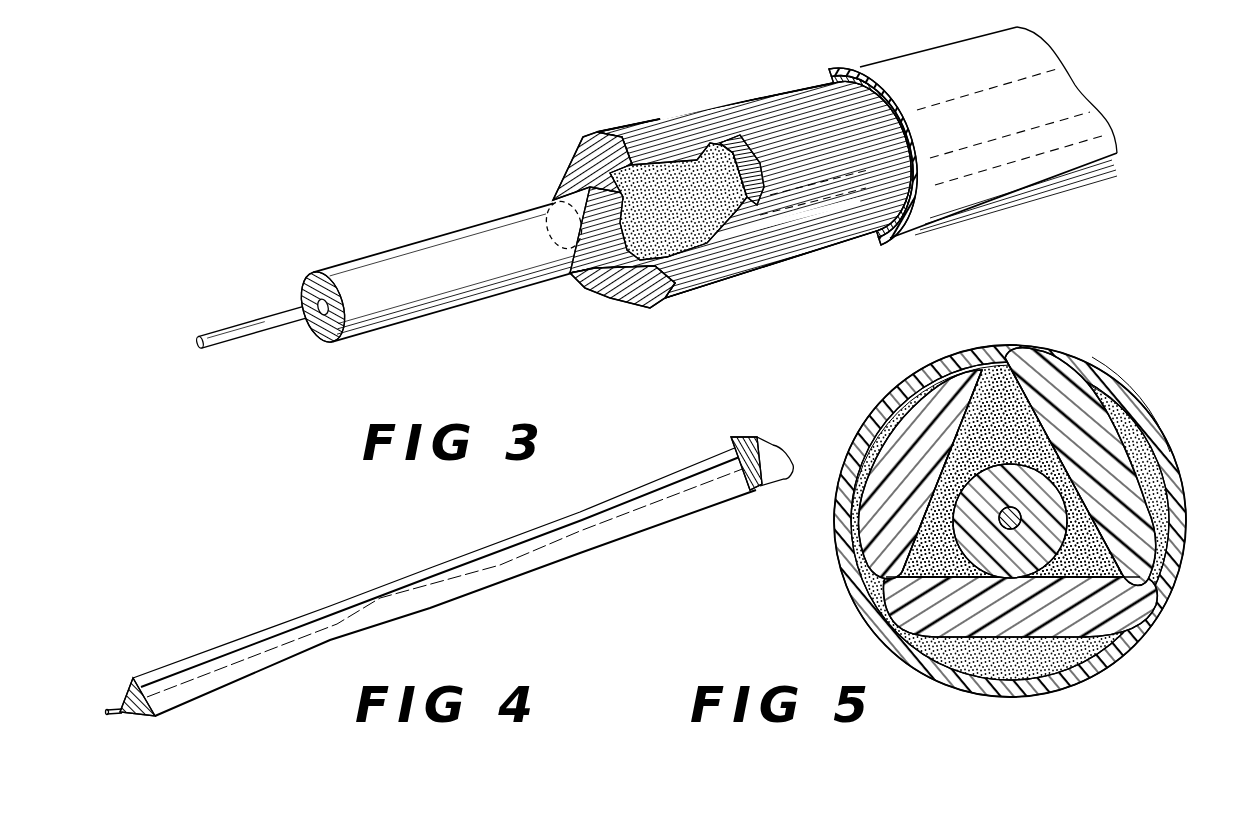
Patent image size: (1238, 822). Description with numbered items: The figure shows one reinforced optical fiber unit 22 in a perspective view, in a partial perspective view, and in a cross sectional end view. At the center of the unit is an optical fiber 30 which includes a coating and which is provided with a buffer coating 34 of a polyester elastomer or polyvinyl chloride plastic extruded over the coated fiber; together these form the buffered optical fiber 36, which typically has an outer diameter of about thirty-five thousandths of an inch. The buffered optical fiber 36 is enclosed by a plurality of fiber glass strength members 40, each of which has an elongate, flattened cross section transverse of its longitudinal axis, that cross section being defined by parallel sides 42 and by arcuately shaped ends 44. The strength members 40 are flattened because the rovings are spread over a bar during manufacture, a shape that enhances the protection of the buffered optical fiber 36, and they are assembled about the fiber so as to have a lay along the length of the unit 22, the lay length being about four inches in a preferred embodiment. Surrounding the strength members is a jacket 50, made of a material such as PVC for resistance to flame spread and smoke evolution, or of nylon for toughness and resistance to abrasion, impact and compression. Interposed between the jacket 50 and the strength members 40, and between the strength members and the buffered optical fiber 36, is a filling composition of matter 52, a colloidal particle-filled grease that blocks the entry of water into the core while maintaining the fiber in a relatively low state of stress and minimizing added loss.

In FIG. 3, the reinforced optical fiber unit 22 is at (846, 46).
In FIG. 4, the reinforced optical fiber unit 22 is at (670, 450).
In FIG. 5, the reinforced optical fiber unit 22 is at (1094, 356).
In FIG. 3, the optical fiber 30 is at (212, 334).
In FIG. 5, the optical fiber 30 is at (1015, 530).
In FIG. 3, the buffer coating 34 is at (306, 277).
In FIG. 5, the buffer coating 34 is at (957, 529).
In FIG. 3, the buffered optical fiber 36 is at (408, 239).
In FIG. 4, the buffered optical fiber 36 is at (127, 700).
In FIG. 5, the buffered optical fiber 36 is at (888, 624).
In FIG. 3, the fiber glass strength members 40 is at (578, 163).
In FIG. 4, the fiber glass strength members 40 is at (207, 670).
In FIG. 5, the fiber glass strength members 40 is at (933, 440).
In FIG. 3, the parallel sides 42 is at (558, 200).
In FIG. 5, the parallel sides 42 is at (1002, 418).
In FIG. 3, the arcuately shaped ends 44 is at (614, 135).
In FIG. 5, the arcuately shaped ends 44 is at (1038, 357).
In FIG. 3, the jacket 50 is at (830, 74).
In FIG. 4, the jacket 50 is at (760, 443).
In FIG. 5, the jacket 50 is at (1145, 409).
In FIG. 3, the filling composition of matter 52 is at (753, 187).
In FIG. 5, the filling composition of matter 52 is at (887, 436).